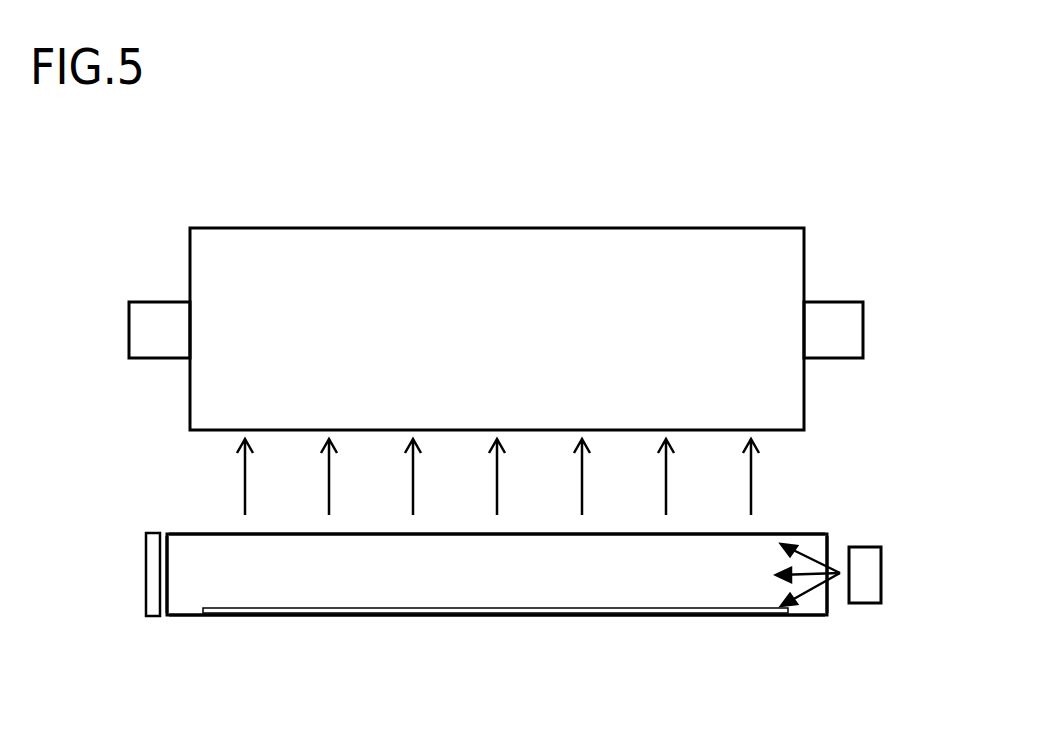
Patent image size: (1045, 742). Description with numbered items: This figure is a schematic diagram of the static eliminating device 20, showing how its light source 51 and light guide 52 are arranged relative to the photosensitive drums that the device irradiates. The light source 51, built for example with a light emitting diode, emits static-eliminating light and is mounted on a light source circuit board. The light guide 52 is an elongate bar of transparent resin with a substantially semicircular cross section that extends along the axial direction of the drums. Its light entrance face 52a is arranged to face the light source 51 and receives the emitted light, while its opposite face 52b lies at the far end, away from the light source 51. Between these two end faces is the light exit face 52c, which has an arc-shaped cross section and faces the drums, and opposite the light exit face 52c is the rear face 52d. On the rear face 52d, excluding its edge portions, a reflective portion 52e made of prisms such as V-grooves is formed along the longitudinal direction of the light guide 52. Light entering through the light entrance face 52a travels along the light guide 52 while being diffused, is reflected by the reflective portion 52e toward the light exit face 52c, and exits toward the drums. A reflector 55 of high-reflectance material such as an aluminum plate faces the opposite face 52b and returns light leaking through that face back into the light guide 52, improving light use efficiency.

The static eliminating device 20 is at (511, 552).
The light source 51 is at (867, 572).
The light guide 52 is at (719, 595).
The light entrance face 52a is at (828, 597).
The opposite face 52b is at (163, 597).
The light exit face 52c is at (758, 534).
The rear face 52d is at (362, 615).
The reflective portion 52e is at (500, 615).
The reflector 55 is at (151, 561).